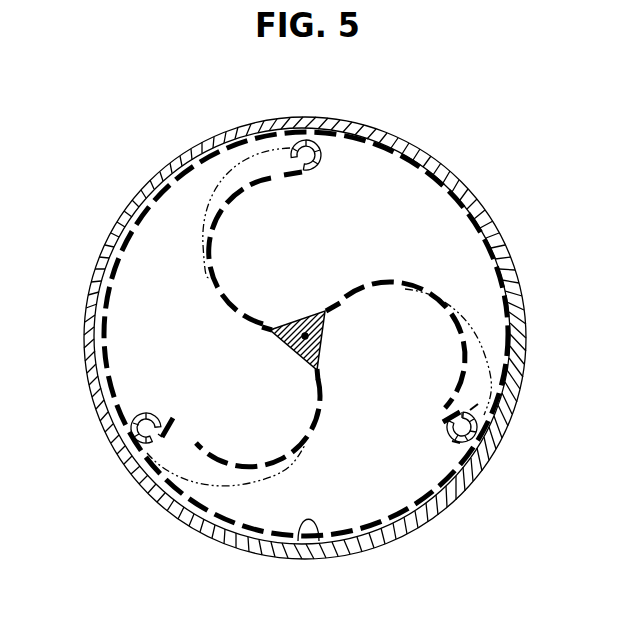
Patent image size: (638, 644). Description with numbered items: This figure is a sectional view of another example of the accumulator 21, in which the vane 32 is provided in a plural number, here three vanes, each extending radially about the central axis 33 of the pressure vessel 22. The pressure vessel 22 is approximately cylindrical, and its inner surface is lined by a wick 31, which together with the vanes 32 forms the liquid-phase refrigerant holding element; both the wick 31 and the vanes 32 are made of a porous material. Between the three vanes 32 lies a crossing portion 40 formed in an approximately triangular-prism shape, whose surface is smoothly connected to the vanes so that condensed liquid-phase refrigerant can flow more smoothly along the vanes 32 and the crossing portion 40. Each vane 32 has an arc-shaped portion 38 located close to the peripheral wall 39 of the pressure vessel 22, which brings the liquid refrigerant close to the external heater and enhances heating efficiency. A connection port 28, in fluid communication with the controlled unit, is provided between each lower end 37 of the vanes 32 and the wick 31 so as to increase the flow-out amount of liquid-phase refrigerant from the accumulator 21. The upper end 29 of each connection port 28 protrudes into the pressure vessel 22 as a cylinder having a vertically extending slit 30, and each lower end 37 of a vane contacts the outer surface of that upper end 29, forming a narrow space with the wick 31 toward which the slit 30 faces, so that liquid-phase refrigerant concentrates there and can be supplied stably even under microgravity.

The accumulator 21 is at (113, 186).
The pressure vessel 22 is at (100, 253).
The connection port 28 is at (331, 157).
The upper end of the connection port 29 is at (450, 443).
The slit 30 is at (477, 416).
The wick 31 is at (318, 542).
The vane 32 is at (368, 282).
The central axis 33 is at (302, 339).
The lower end of the vane 37 is at (274, 348).
The arc-shaped portion 38 is at (245, 190).
The peripheral wall 39 is at (448, 500).
The crossing portion 40 is at (308, 340).